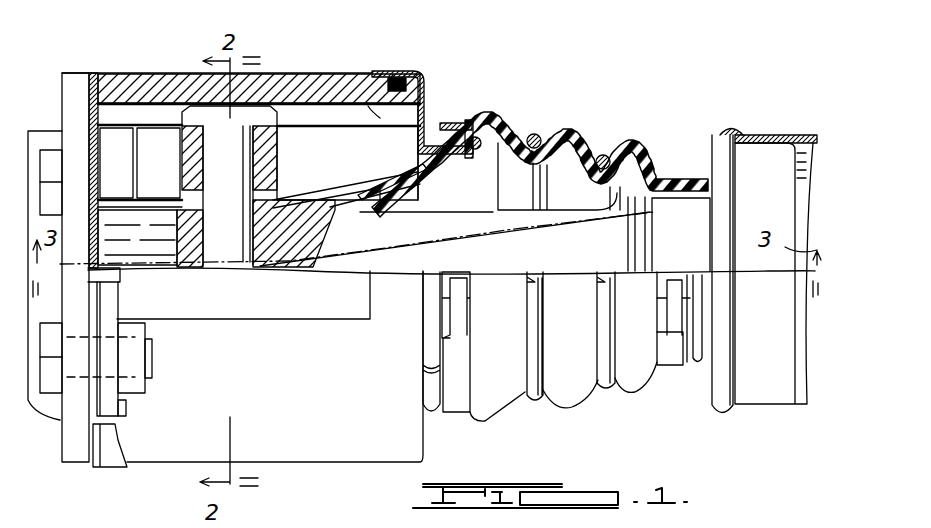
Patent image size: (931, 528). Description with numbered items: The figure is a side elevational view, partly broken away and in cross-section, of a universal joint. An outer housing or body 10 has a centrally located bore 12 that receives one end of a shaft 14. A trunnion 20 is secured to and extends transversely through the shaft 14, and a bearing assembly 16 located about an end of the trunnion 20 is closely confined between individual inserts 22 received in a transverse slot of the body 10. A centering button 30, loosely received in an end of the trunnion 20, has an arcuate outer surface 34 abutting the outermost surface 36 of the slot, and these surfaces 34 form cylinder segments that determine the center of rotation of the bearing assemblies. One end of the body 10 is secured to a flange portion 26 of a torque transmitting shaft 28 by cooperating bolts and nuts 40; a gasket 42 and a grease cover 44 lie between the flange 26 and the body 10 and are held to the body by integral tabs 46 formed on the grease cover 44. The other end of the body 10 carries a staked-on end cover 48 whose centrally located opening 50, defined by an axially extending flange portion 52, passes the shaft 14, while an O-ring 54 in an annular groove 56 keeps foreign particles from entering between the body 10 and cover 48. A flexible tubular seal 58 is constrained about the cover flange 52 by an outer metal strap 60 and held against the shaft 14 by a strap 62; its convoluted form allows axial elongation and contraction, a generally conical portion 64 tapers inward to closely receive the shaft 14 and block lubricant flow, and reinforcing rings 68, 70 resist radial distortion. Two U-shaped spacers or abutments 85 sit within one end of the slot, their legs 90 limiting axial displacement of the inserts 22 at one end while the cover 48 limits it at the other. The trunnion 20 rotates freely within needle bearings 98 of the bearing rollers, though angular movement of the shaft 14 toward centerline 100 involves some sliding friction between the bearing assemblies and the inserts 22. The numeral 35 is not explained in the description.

The outer housing or body 10 is at (303, 70).
The bore 12 is at (146, 245).
The shaft 14 is at (458, 220).
The bearing assembly 16 is at (291, 151).
The trunnion 20 is at (242, 242).
The inserts 22 is at (428, 110).
The flange portion 26 is at (76, 73).
The torque transmitting shaft 28 is at (40, 131).
The centering button 30 is at (247, 110).
The outer surfaces 34 is at (193, 107).
The groove 35 is at (370, 113).
The outermost surface 36 is at (324, 100).
The bolts and nuts 40 is at (145, 383).
The gasket 42 is at (104, 88).
The grease cover 44 is at (90, 97).
The integral tabs 46 is at (122, 416).
The end cover 48 is at (438, 83).
The opening 50 is at (428, 161).
The flange portion 52 is at (486, 133).
The O-ring 54 is at (410, 68).
The annular groove 56 is at (392, 77).
The flexible tubular seal 58 is at (568, 133).
The outer metal strap 60 is at (490, 112).
The strap 62 is at (673, 178).
The conical portion 64 is at (443, 160).
The reinforcing ring 68 is at (540, 133).
The reinforcing ring 70 is at (608, 156).
The U-shaped spacers or abutments 85 is at (102, 163).
The legs 90 is at (118, 137).
The needle bearings 98 is at (196, 165).
The centerline 100 is at (470, 240).